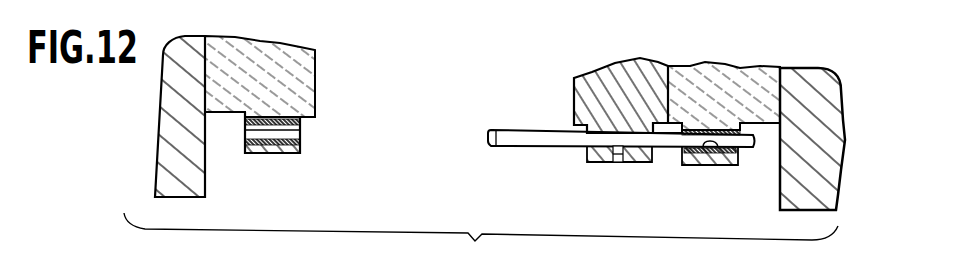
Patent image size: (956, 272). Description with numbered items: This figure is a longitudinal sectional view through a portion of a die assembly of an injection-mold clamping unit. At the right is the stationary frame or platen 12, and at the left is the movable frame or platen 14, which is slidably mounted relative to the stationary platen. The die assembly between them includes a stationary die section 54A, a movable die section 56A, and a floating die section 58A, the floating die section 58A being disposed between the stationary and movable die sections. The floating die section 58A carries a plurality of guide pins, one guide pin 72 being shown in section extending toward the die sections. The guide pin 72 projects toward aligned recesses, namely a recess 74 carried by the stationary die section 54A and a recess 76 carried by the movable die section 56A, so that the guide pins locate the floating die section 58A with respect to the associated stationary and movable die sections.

The stationary platen 12 is at (812, 77).
The movable platen 14 is at (192, 55).
The stationary die section 54A is at (722, 75).
The movable die section 56A is at (295, 55).
The floating die section 58A is at (619, 73).
The guide pin 72 is at (548, 147).
The recess 74 is at (709, 147).
The recess 76 is at (303, 135).